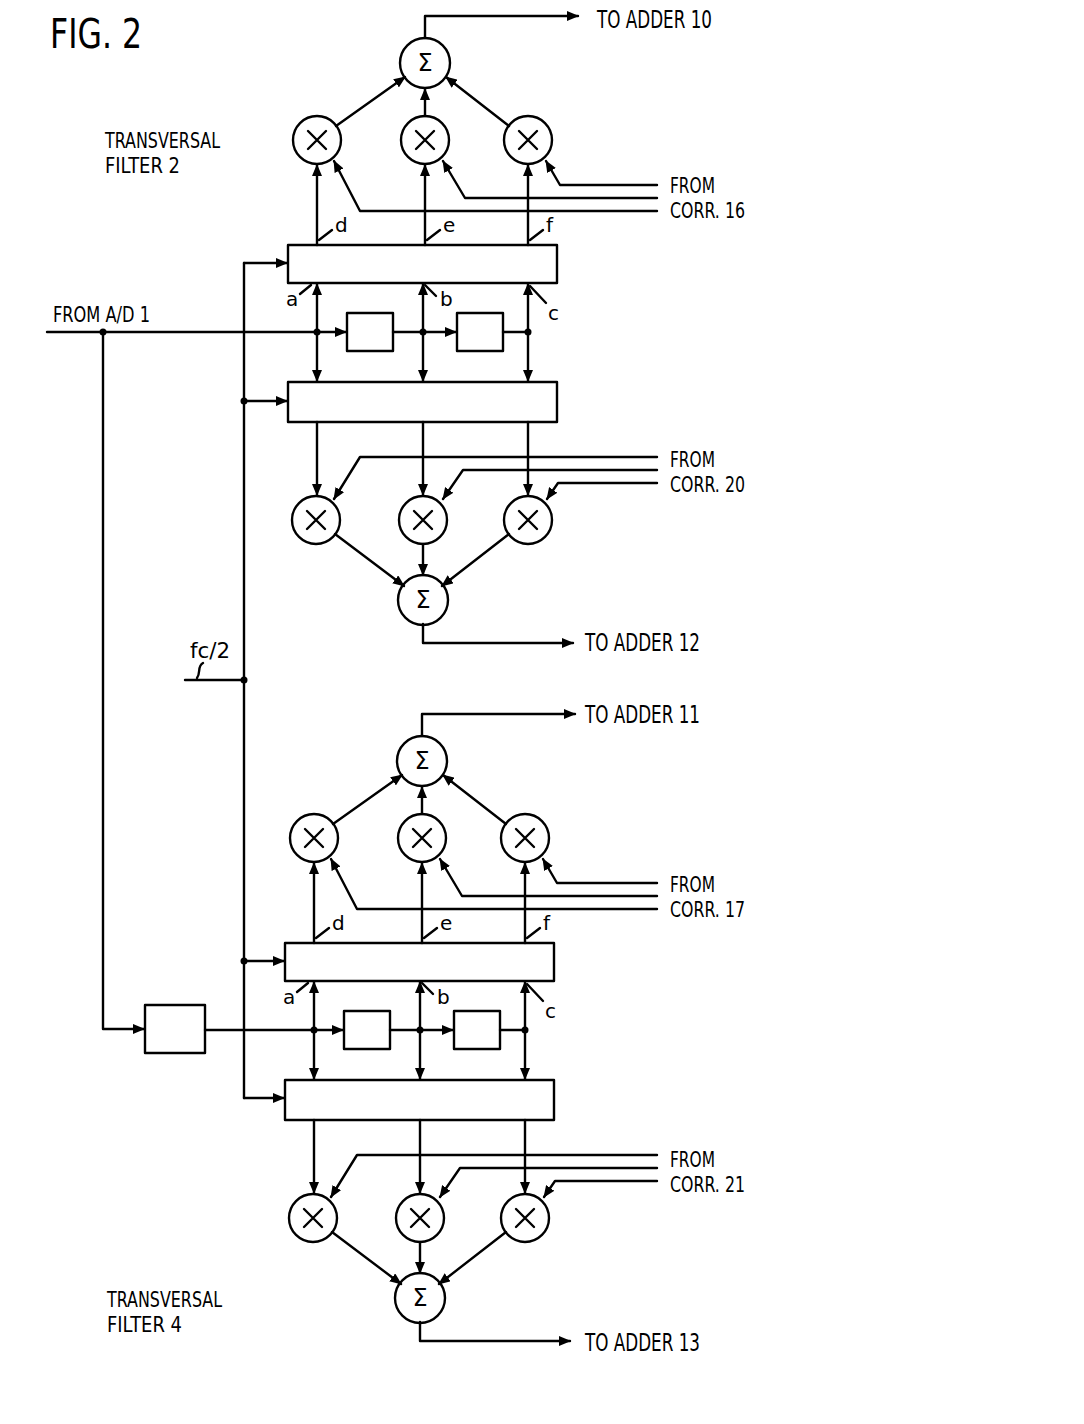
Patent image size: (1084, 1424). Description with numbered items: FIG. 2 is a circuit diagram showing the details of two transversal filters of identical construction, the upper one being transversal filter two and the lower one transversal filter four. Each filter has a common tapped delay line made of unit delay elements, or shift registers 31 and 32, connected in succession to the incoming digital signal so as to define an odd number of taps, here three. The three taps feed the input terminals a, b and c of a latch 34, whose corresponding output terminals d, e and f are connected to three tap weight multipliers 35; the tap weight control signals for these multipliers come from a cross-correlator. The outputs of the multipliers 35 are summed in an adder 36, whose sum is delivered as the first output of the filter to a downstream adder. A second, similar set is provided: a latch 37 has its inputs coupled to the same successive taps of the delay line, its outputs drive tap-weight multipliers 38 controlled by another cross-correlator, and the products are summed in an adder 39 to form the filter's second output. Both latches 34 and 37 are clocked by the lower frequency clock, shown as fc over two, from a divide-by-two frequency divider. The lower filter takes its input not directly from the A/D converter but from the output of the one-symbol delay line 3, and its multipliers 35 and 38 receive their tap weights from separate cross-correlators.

The one-symbol delay line 3 is at (170, 997).
The unit delay element 31 is at (369, 298).
The unit delay element 32 is at (481, 298).
The latch 34 is at (559, 270).
The tap weight multiplier 35 is at (319, 115).
The adder 36 is at (448, 54).
The latch 37 is at (559, 398).
The tap-weight multiplier 38 is at (299, 543).
The adder 39 is at (404, 618).